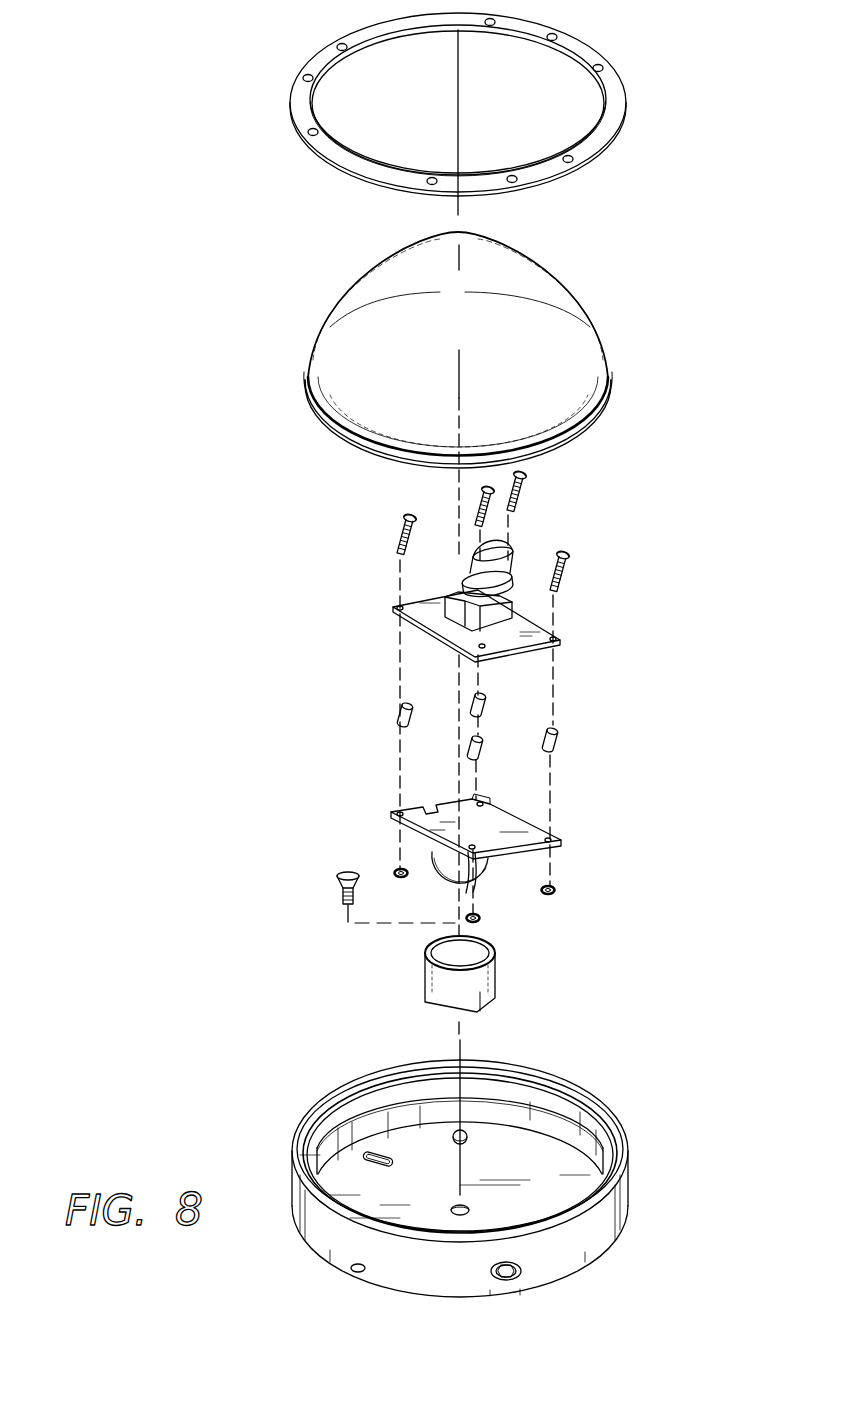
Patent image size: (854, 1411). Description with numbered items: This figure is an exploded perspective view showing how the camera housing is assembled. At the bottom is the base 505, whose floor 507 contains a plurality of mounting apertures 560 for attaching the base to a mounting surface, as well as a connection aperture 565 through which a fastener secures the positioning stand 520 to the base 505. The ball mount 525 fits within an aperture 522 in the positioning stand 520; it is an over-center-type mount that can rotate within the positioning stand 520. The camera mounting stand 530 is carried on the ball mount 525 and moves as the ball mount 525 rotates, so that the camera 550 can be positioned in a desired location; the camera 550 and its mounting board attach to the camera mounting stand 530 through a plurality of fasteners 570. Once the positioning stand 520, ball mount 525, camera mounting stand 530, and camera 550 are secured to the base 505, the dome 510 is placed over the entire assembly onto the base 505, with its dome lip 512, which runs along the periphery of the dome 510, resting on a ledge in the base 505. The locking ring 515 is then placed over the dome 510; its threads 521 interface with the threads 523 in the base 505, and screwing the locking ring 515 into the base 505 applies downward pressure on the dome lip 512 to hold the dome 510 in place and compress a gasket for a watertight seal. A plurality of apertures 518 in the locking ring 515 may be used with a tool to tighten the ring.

The base 505 is at (628, 1195).
The floor 507 is at (357, 1178).
The dome 510 is at (567, 278).
The dome lip 512 is at (607, 375).
The locking ring 515 is at (585, 45).
The apertures 518 is at (340, 45).
The positioning stand 520 is at (453, 985).
The threads 521 is at (625, 122).
The aperture 522 is at (472, 960).
The threads 523 is at (578, 1088).
The ball mount 525 is at (485, 880).
The camera mounting stand 530 is at (447, 815).
The camera 550 is at (455, 587).
The mounting apertures 560 is at (455, 1135).
The connection aperture 565 is at (466, 1207).
The fasteners 570 is at (523, 473).